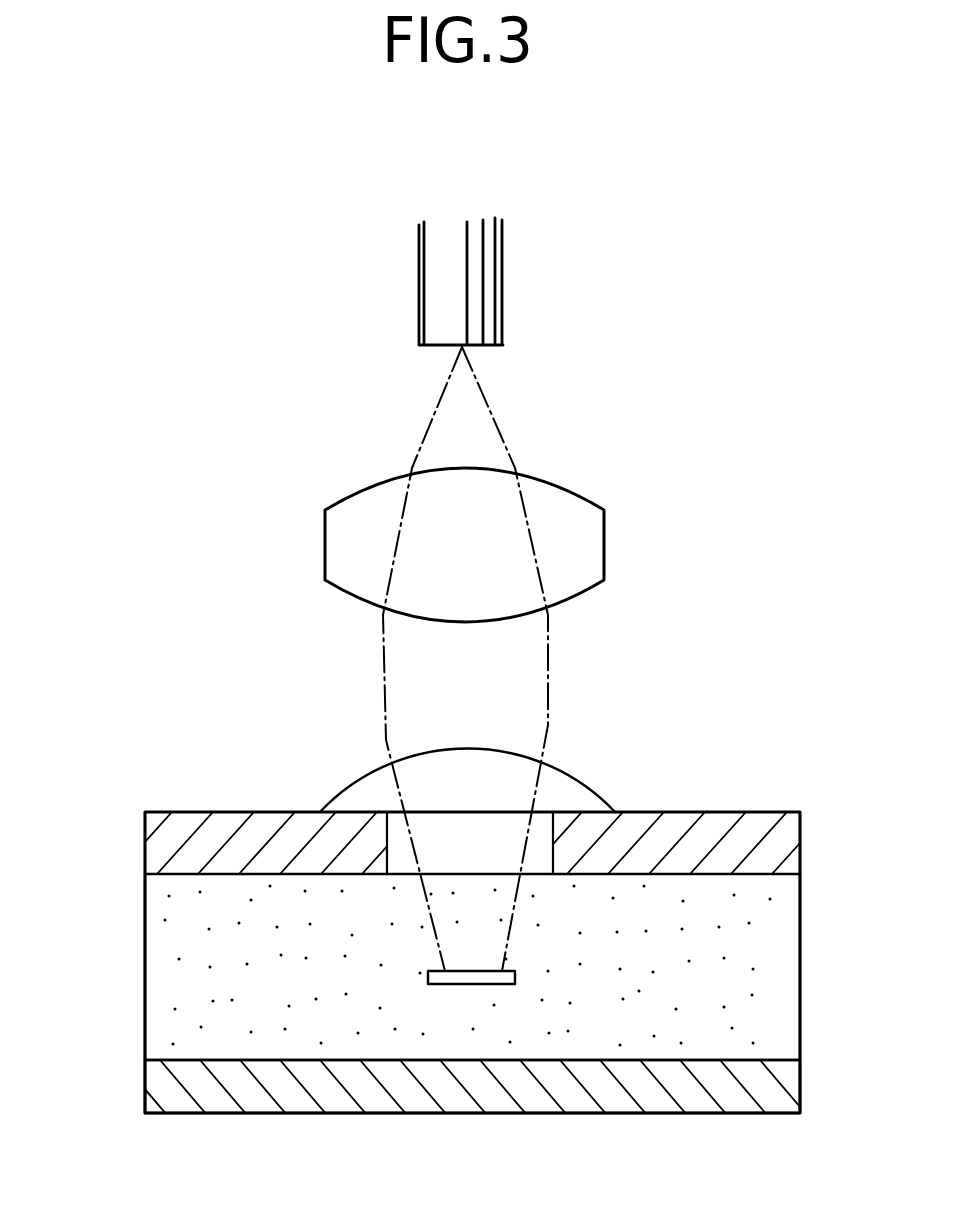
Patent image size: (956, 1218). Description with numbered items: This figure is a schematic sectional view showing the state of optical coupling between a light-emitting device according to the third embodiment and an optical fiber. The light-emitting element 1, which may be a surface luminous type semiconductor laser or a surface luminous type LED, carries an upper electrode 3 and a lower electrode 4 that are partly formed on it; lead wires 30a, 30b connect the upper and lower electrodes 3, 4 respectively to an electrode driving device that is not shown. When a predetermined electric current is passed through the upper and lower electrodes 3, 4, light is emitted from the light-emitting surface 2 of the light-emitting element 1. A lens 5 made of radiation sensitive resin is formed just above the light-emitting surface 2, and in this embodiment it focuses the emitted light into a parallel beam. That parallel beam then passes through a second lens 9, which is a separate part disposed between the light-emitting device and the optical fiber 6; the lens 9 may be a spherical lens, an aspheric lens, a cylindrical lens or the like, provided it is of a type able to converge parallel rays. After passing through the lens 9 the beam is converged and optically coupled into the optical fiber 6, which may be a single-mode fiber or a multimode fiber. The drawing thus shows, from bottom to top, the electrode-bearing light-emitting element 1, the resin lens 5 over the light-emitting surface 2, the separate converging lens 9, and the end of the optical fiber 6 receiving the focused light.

The light-emitting element 1 is at (773, 978).
The light-emitting surface 2 is at (482, 982).
The upper electrode 3 is at (780, 838).
The lower electrode 4 is at (782, 1093).
The lens 5 is at (570, 788).
The optical fiber 6 is at (418, 283).
The lens 9 is at (583, 517).
The lead wire 30a is at (60, 841).
The lead wire 30b is at (65, 1083).